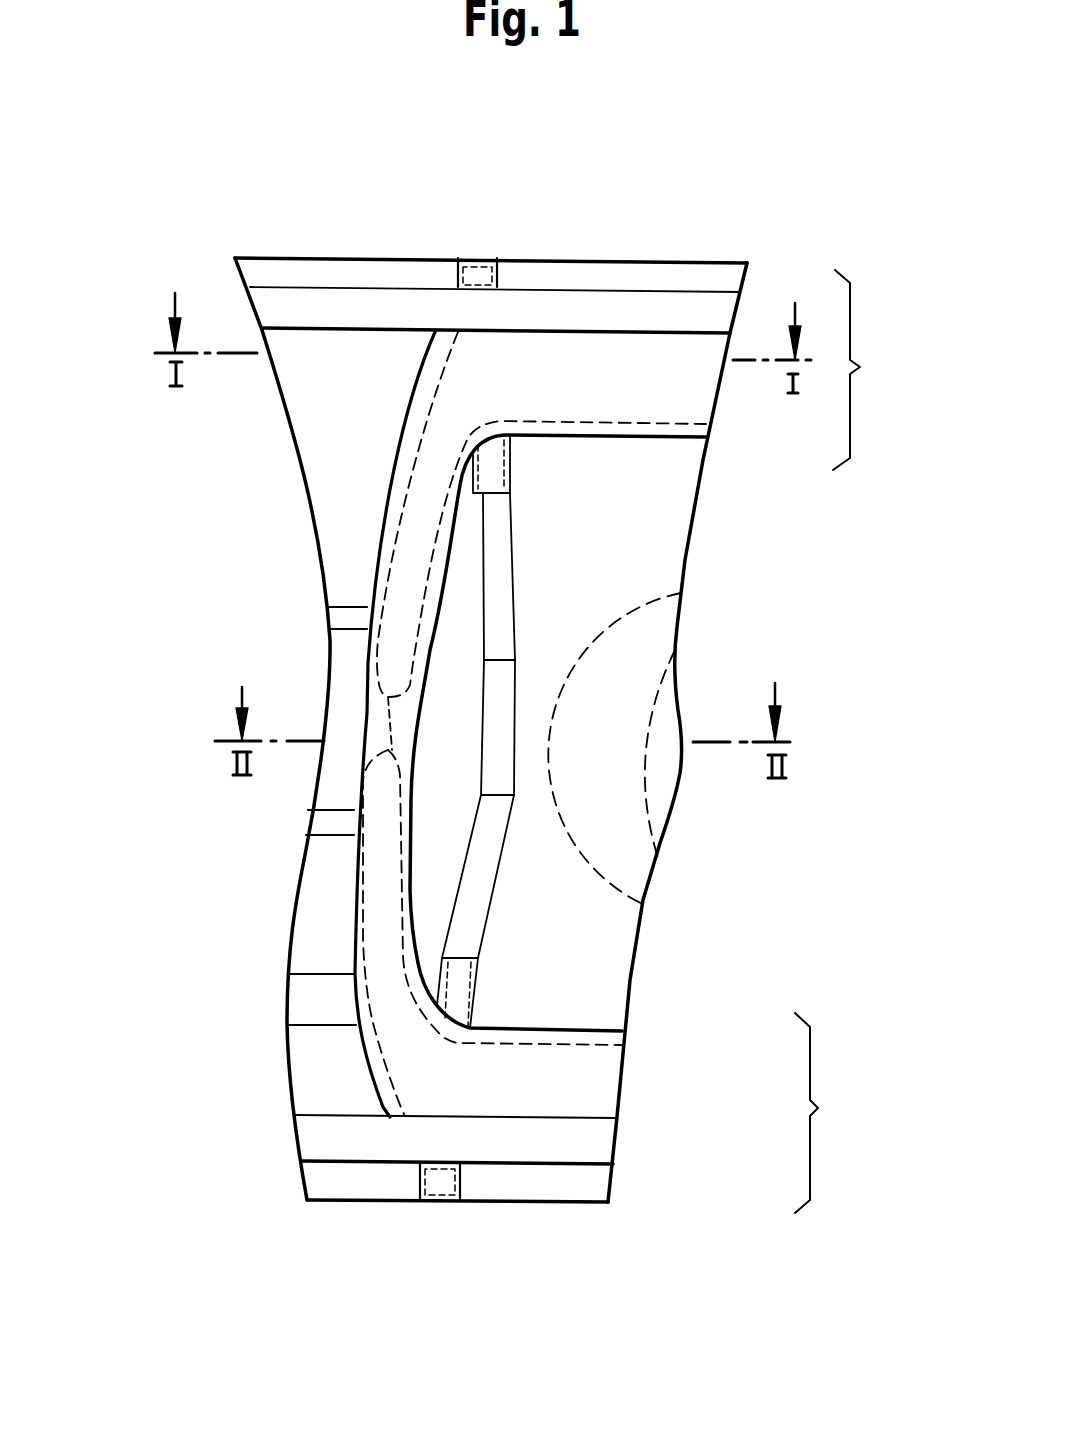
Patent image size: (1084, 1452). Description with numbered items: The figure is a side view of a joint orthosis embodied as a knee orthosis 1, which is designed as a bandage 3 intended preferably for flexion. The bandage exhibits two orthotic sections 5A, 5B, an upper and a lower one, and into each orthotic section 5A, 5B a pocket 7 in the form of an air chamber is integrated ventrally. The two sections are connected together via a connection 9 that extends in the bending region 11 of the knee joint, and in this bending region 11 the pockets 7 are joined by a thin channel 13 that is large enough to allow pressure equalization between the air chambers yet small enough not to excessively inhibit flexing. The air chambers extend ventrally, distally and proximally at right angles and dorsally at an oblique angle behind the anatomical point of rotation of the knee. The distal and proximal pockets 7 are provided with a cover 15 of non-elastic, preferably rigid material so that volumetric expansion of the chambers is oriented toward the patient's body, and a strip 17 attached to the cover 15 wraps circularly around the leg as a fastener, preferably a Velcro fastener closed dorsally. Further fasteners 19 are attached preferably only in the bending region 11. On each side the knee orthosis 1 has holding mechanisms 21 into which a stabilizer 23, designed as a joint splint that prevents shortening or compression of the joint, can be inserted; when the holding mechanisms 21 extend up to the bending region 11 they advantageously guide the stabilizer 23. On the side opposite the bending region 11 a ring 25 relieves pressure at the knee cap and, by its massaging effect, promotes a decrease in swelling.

The knee orthosis 1 is at (222, 212).
The bandage 3 is at (288, 1072).
The orthotic section 5A is at (527, 370).
The orthotic section 5B is at (536, 948).
The pocket 7 is at (677, 397).
The connection 9 is at (372, 550).
The bending region 11 is at (318, 688).
The channel 13 is at (392, 737).
The cover 15 is at (693, 427).
The strip 17 is at (343, 303).
The fastener 19 is at (338, 617).
The holding mechanism 21 is at (497, 273).
The stabilizer 23 is at (487, 915).
The ring 25 is at (660, 630).